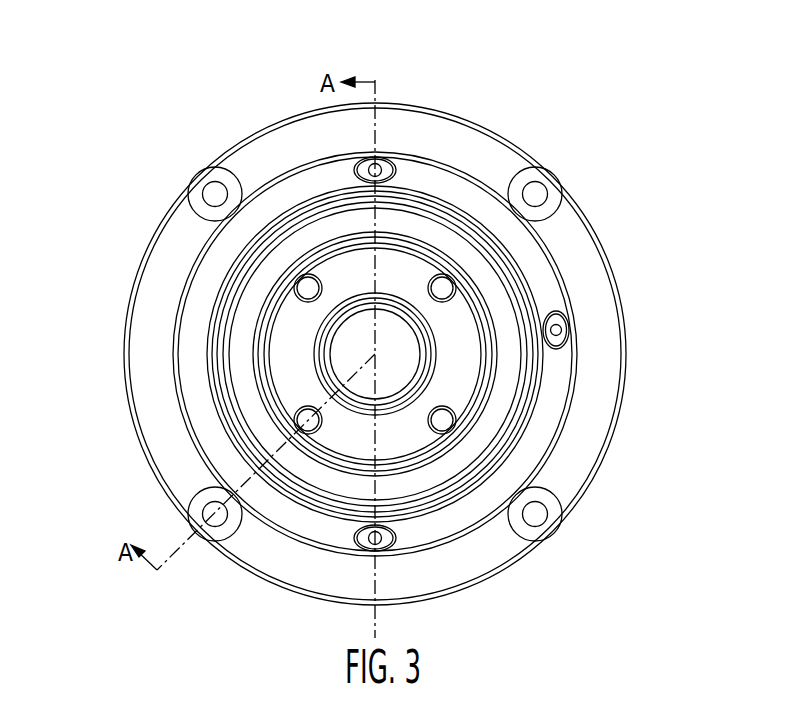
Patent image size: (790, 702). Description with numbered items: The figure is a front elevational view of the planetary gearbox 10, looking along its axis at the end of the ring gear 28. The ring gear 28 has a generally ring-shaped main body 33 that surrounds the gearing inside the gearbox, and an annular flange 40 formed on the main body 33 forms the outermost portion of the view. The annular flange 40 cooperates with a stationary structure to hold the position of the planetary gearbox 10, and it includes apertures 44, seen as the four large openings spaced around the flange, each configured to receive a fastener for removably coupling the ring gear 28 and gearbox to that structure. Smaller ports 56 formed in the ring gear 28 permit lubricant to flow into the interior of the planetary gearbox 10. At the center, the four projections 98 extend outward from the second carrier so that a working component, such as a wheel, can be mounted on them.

The planetary gearbox 10 is at (84, 147).
The ring gear 28 is at (124, 282).
The annular flange 40 is at (257, 147).
The main body 33 is at (552, 397).
The aperture 44 is at (537, 193).
The port 56 is at (391, 163).
The projections 98 is at (443, 287).